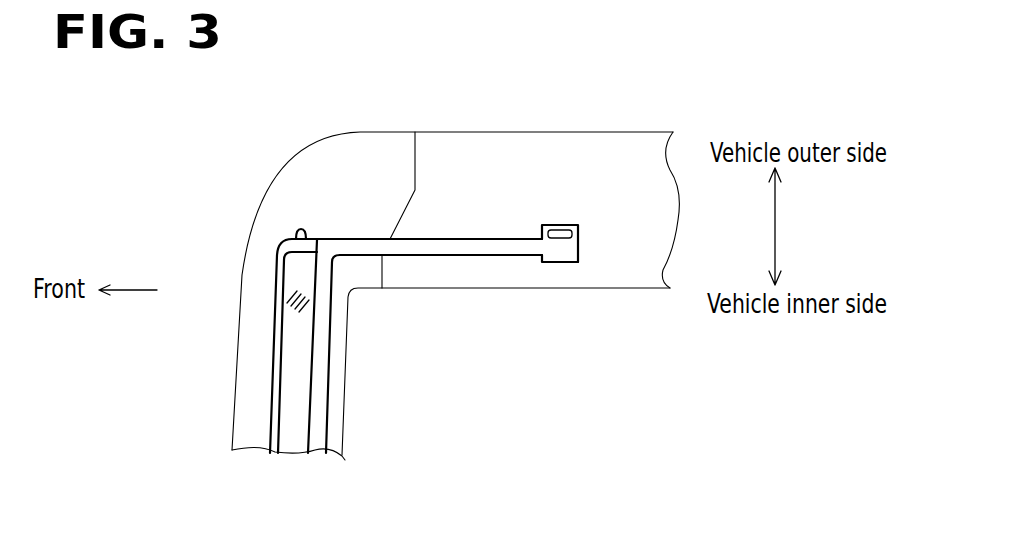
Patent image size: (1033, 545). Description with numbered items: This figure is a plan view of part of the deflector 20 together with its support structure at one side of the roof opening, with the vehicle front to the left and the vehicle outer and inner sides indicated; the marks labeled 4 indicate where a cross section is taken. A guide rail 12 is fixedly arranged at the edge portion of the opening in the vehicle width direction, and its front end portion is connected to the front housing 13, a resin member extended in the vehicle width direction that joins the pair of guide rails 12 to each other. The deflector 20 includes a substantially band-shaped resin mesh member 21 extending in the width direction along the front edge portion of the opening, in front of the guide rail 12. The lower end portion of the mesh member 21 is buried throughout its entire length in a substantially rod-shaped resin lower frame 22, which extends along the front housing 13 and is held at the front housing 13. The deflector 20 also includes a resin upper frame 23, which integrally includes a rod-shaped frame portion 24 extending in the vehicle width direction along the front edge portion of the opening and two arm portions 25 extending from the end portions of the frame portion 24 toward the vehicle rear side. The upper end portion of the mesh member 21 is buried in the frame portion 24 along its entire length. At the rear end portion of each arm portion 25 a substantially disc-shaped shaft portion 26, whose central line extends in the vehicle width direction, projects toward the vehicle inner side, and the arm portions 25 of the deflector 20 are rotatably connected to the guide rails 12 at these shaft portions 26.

The section line IV-IV 4 is at (562, 123).
The guide rail 12 is at (633, 290).
The front housing 13 is at (318, 144).
The deflector 20 is at (364, 341).
The mesh member 21 is at (275, 342).
The lower frame 22 is at (268, 385).
The upper frame 23 is at (320, 340).
The frame portion 24 is at (322, 382).
The arm portion 25 is at (488, 239).
The shaft portion 26 is at (560, 263).